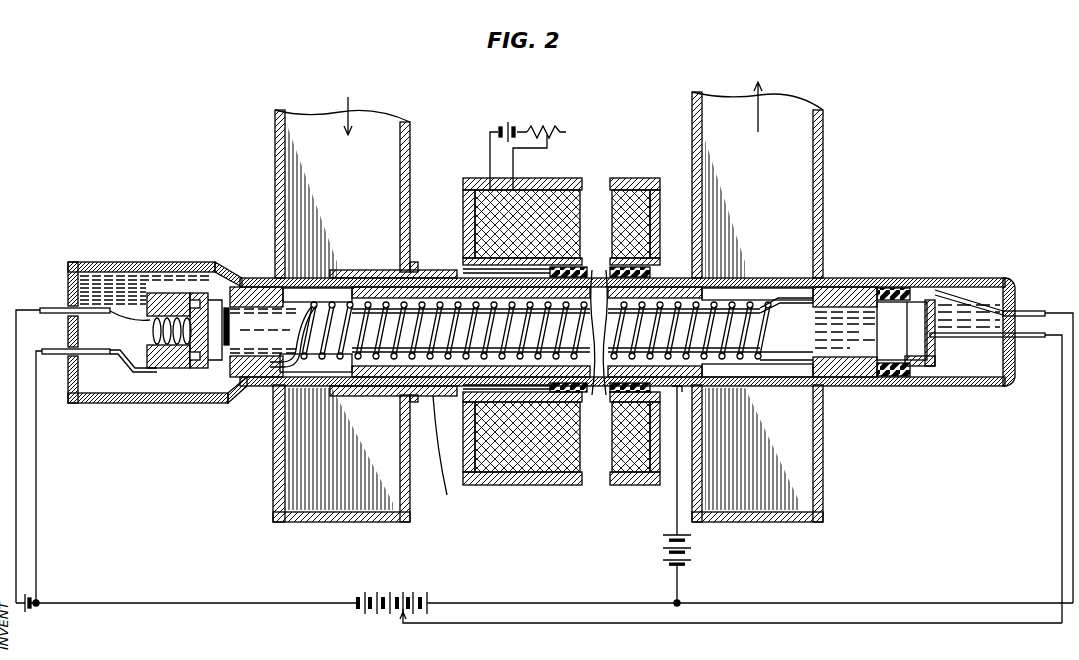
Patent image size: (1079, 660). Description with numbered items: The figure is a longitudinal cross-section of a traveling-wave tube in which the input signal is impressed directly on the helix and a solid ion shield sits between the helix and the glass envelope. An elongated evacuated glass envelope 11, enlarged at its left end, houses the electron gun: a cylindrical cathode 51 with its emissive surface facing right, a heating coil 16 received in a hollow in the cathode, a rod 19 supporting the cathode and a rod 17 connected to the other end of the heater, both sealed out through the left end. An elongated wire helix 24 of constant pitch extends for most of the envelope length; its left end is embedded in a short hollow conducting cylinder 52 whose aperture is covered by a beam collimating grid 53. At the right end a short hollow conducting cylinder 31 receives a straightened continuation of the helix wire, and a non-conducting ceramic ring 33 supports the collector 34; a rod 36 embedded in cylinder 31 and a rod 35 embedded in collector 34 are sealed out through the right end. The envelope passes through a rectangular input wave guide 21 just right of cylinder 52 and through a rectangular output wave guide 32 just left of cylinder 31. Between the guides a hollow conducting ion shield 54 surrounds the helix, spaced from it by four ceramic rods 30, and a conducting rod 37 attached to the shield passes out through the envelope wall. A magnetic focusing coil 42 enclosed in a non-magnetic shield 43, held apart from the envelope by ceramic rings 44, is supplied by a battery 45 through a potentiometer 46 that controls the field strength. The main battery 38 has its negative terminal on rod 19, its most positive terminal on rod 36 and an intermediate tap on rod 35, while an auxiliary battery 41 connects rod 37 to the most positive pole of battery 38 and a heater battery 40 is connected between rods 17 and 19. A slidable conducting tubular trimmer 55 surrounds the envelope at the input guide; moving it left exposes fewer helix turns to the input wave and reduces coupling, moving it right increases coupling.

The glass envelope 11 is at (918, 282).
The heating coil 16 is at (152, 336).
The rod 17 is at (55, 306).
The rod 19 is at (52, 358).
The radio frequency signal input wave guide 21 is at (275, 166).
The wire helix 24 is at (765, 346).
The non-conducting rods 30 is at (798, 354).
The hollow conducting cylinder 31 is at (846, 308).
The signal output wave guide 32 is at (825, 173).
The non-conducting ring 33 is at (912, 377).
The collector 34 is at (936, 352).
The rod 35 is at (1023, 340).
The rod 36 is at (1031, 312).
The conducting rod 37 is at (668, 400).
The main battery 38 is at (386, 596).
The heater battery 40 is at (38, 606).
The auxiliary battery 41 is at (688, 553).
The magnetic focusing coil 42 is at (578, 198).
The non-magnetic shield 43 is at (556, 180).
The ceramic rings 44 is at (586, 275).
The battery 45 is at (510, 124).
The potentiometer 46 is at (548, 126).
The cathode 51 is at (176, 292).
The hollow conducting cylinder 52 is at (229, 372).
The beam collimating grid 53 is at (222, 316).
The ion shield 54 is at (671, 287).
The trimmer 55 is at (432, 270).